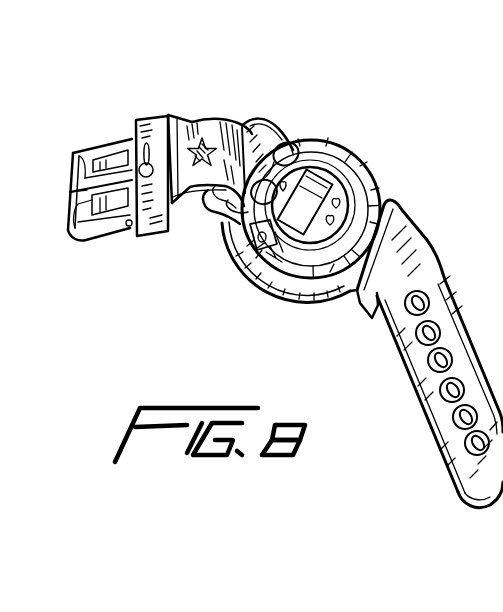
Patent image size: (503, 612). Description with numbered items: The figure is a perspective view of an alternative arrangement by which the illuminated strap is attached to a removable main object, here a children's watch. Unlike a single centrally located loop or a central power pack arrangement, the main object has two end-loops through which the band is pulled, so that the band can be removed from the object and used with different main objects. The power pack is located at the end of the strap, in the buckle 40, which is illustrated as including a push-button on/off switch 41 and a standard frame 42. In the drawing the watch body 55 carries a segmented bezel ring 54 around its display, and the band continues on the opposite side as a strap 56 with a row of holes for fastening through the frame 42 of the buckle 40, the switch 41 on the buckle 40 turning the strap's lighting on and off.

The buckle 40 is at (148, 234).
The push-button on/off switch 41 is at (181, 123).
The standard frame 42 is at (75, 153).
The bezel ring 54 is at (337, 145).
The watch case 55 is at (243, 124).
The watch strap 56 is at (402, 228).